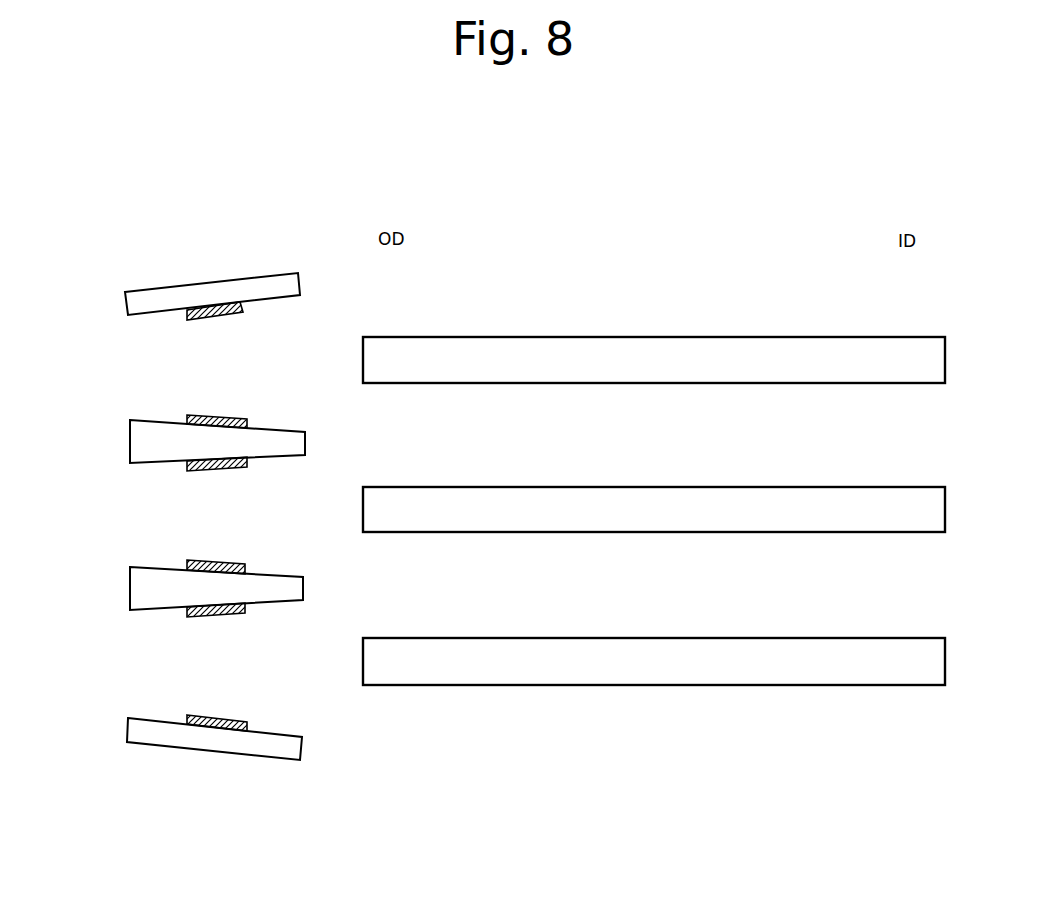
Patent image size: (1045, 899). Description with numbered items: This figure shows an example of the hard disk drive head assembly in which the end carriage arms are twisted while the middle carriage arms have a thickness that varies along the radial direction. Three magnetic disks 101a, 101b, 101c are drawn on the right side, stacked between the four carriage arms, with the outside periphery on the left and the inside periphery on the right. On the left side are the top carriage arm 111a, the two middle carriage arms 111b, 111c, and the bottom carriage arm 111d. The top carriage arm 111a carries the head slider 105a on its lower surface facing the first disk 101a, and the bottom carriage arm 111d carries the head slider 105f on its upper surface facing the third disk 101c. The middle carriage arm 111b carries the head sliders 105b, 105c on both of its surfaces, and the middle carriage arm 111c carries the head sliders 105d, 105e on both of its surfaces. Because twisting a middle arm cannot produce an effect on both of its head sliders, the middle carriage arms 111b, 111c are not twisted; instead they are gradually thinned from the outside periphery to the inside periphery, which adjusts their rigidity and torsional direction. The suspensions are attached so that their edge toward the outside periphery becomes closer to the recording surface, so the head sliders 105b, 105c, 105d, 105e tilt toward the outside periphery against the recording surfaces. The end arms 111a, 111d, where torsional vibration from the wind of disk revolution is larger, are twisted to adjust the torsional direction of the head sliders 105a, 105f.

The magnetic disk 101a is at (583, 337).
The magnetic disk 101b is at (570, 487).
The magnetic disk 101c is at (572, 638).
The top carriage arm 111a is at (125, 305).
The middle carriage arm 111b is at (130, 442).
The middle carriage arm 111c is at (130, 590).
The bottom carriage arm 111d is at (127, 728).
The head slider 105a is at (207, 314).
The head slider 105b is at (225, 417).
The head slider 105c is at (200, 474).
The head slider 105d is at (230, 562).
The head slider 105e is at (213, 618).
The head slider 105f is at (228, 717).